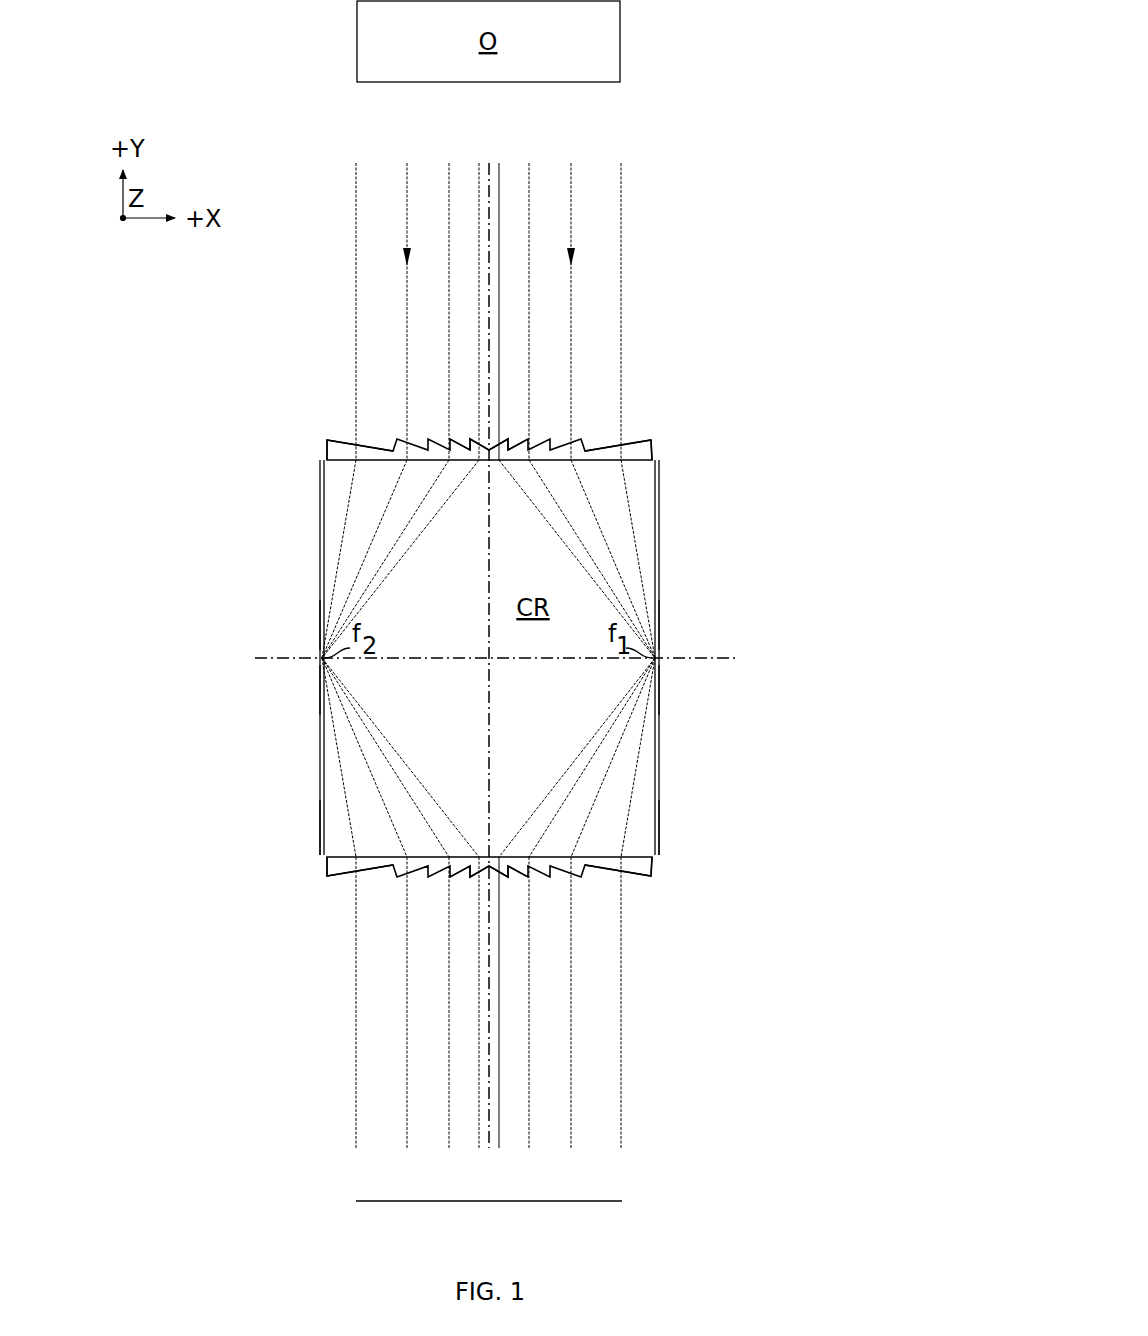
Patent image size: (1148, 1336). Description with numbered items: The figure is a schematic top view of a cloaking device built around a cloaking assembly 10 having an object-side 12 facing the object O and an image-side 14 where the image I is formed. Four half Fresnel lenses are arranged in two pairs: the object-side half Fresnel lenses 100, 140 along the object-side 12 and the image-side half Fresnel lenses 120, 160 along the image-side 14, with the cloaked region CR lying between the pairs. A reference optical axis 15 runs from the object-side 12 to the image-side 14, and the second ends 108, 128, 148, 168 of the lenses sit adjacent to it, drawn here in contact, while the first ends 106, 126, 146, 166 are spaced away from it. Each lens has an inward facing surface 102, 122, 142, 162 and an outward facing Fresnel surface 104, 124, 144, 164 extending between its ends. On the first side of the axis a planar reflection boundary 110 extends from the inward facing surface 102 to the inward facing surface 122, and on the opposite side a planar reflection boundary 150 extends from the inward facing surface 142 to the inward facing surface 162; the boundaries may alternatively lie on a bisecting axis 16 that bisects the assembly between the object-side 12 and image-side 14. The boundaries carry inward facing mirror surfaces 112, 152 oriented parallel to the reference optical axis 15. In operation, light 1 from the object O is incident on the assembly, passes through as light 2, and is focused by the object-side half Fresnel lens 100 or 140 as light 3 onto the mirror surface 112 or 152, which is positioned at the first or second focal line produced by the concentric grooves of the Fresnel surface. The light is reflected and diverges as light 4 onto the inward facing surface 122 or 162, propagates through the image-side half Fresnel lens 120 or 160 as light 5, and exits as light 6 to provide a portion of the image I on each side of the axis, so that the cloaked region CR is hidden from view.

The light from object 1 is at (407, 237).
The light propagating through object-side half Fresnel lens 2 is at (400, 445).
The focused light 3 is at (378, 515).
The reflected diverging light 4 is at (355, 770).
The light propagating through image-side half Fresnel lens 5 is at (400, 875).
The image-forming light 6 is at (407, 1005).
The cloaking assembly 10 is at (722, 165).
The object-side 12 is at (720, 243).
The image-side 14 is at (753, 902).
The reference optical axis 15 is at (489, 173).
The bisecting axis 16 is at (712, 660).
The object-side half Fresnel lens 100 is at (503, 441).
The inward facing surface 102 is at (657, 470).
The outward facing Fresnel surface 104 is at (650, 438).
The first end 106 is at (654, 450).
The second end 108 is at (495, 462).
The planar reflection boundary 110 is at (660, 634).
The inward facing mirror surface 112 is at (657, 688).
The image-side half Fresnel lens 120 is at (505, 872).
The inward facing surface 122 is at (657, 846).
The outward facing Fresnel surface 124 is at (650, 880).
The first end 126 is at (655, 868).
The second end 128 is at (495, 855).
The object-side half Fresnel lens 140 is at (487, 441).
The inward facing surface 142 is at (322, 470).
The outward facing Fresnel surface 144 is at (327, 438).
The first end 146 is at (325, 452).
The second end 148 is at (482, 462).
The planar reflection boundary 150 is at (319, 626).
The inward facing mirror surface 152 is at (325, 694).
The image-side half Fresnel lens 160 is at (489, 872).
The inward facing surface 162 is at (322, 846).
The outward facing Fresnel surface 164 is at (330, 880).
The first end 166 is at (320, 868).
The second end 168 is at (483, 855).